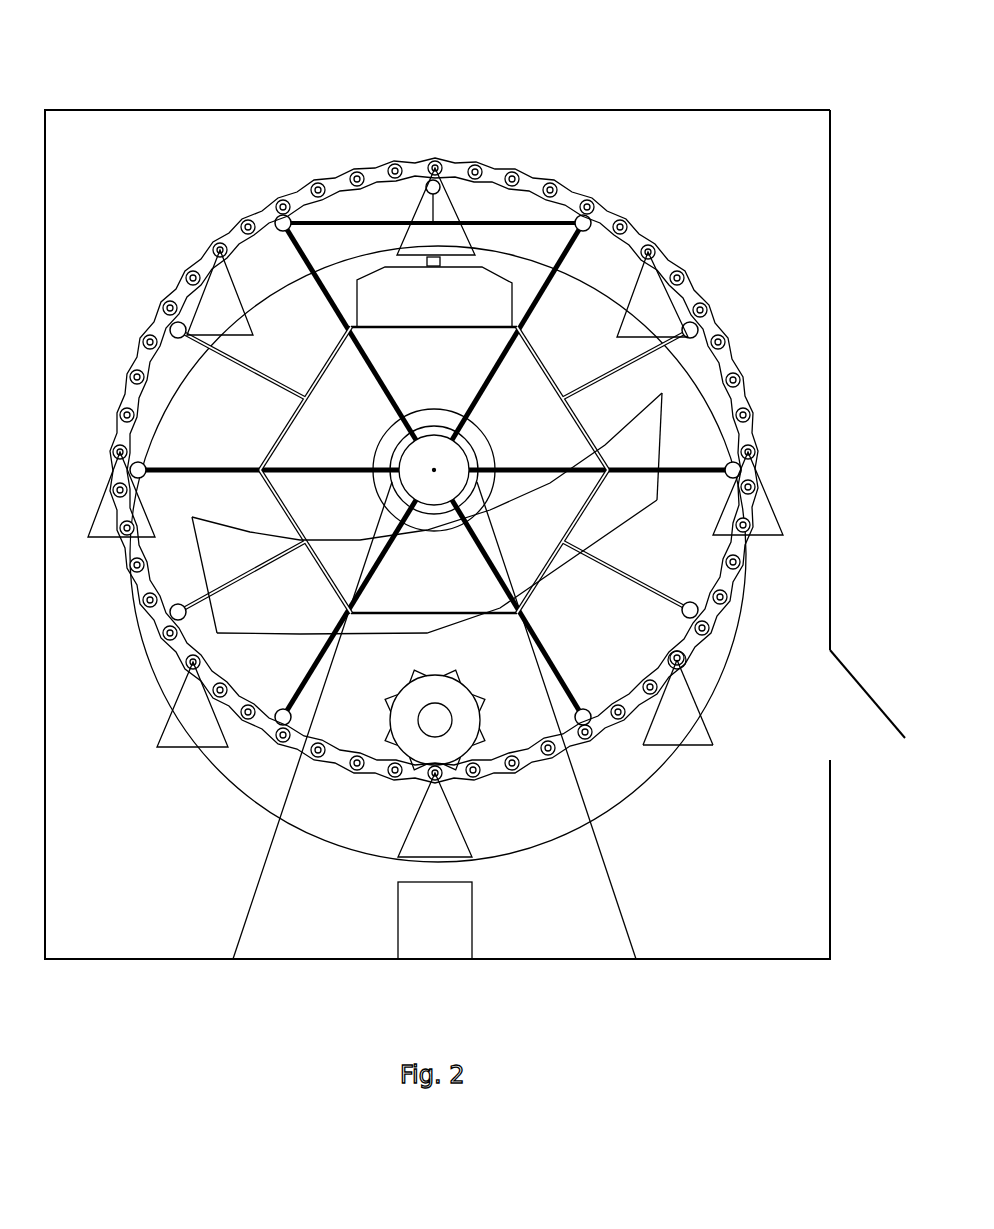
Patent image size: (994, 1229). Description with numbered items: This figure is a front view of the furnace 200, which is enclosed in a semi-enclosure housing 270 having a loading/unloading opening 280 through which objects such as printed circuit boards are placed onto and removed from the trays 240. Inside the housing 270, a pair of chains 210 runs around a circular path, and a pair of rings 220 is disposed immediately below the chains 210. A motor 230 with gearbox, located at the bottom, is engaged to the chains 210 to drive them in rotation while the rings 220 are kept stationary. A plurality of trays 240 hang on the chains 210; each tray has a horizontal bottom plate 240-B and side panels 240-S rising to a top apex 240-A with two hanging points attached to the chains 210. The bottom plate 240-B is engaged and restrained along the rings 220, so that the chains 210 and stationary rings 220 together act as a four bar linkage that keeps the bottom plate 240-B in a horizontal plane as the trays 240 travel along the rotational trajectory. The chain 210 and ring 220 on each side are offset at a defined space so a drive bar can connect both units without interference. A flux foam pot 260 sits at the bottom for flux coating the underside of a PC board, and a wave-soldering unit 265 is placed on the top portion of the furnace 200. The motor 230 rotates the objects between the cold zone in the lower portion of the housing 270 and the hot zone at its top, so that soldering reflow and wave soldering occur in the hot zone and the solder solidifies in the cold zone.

The furnace 200 is at (593, 92).
The chains 210 is at (637, 235).
The rings 220 is at (738, 640).
The motor 230 is at (450, 705).
The trays 240 is at (683, 702).
The top apex 240-A is at (672, 658).
The side panels 240-S is at (710, 733).
The horizontal bottom plate 240-B is at (695, 748).
The flux foam pot 260 is at (443, 923).
The wave-soldering unit 265 is at (415, 290).
The semi-enclosure housing 270 is at (278, 114).
The loading/unloading opening 280 is at (867, 725).